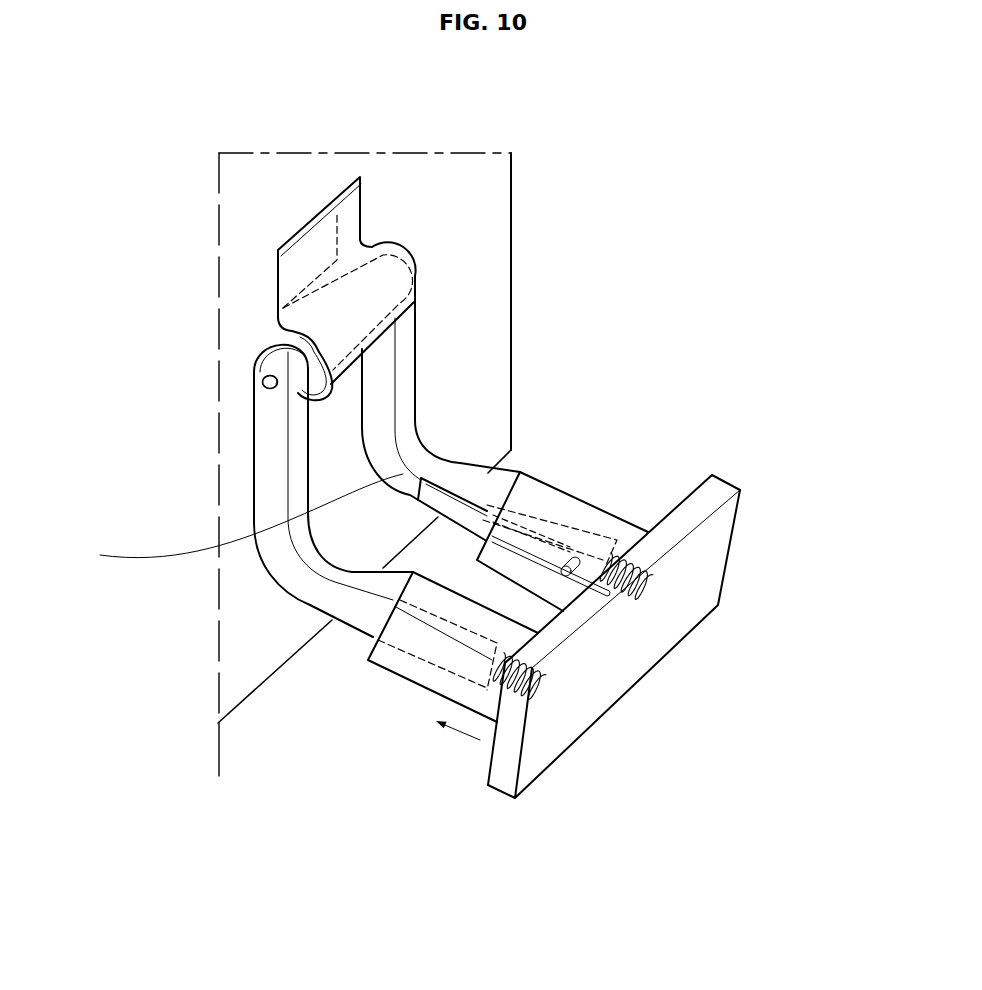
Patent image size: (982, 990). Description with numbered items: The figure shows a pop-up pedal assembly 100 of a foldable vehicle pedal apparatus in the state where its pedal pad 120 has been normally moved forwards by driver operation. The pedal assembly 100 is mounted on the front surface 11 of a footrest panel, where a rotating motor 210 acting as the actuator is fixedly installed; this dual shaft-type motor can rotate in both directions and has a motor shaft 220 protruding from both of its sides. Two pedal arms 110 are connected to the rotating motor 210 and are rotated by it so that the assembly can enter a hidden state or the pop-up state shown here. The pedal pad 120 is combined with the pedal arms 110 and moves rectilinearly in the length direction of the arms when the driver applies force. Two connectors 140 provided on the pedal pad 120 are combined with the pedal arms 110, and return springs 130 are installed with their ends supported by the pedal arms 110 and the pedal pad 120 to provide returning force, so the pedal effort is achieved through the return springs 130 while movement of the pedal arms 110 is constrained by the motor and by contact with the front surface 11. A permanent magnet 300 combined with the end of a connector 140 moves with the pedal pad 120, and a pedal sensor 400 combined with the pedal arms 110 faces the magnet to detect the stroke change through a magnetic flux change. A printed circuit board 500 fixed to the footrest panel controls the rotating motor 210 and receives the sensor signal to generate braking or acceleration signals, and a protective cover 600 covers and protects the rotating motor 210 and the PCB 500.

The front surface 11 is at (492, 238).
The pedal assembly 100 is at (614, 651).
The pedal arms 110 is at (275, 492).
The pedal pad 120 is at (607, 698).
The return springs 130 is at (652, 580).
The connectors 140 is at (617, 517).
The rotating motor 210 is at (292, 338).
The motor shaft 220 is at (265, 385).
The permanent magnet 300 is at (530, 505).
The pedal sensor 400 is at (437, 498).
The printed circuit board 500 is at (312, 255).
The protective cover 600 is at (348, 208).